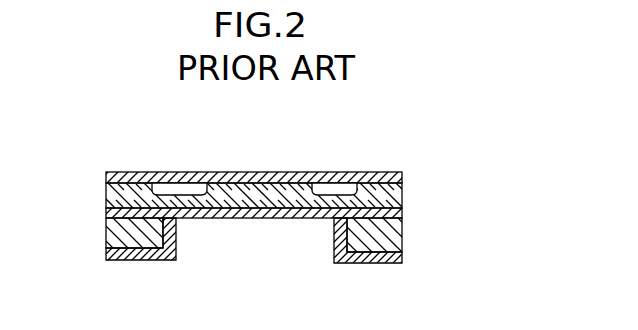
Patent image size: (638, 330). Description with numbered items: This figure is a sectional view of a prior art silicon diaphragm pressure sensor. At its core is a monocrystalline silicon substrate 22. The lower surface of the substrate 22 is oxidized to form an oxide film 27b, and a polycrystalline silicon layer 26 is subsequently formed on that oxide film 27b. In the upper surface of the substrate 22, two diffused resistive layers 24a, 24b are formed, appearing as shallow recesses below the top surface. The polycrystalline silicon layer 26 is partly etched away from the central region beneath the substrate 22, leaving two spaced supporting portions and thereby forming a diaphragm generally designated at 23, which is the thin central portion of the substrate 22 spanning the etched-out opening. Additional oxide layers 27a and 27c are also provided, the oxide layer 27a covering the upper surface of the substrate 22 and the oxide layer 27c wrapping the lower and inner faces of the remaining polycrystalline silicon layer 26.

The monocrystalline silicon substrate 22 is at (403, 198).
The diaphragm 23 is at (265, 219).
The diffused resistive layer 24a is at (338, 188).
The diffused resistive layer 24b is at (181, 188).
The polycrystalline silicon layer 26 is at (403, 237).
The oxide layer 27a is at (403, 178).
The oxide film 27b is at (403, 214).
The oxide layer 27c is at (398, 264).